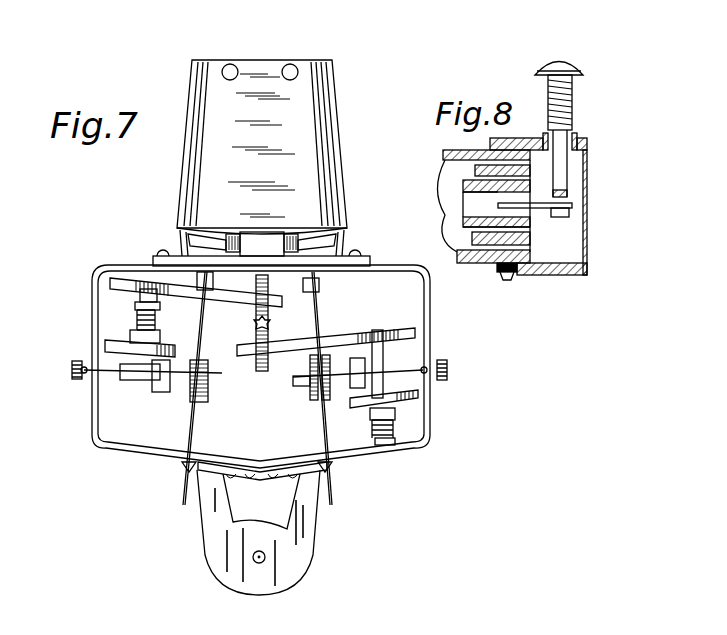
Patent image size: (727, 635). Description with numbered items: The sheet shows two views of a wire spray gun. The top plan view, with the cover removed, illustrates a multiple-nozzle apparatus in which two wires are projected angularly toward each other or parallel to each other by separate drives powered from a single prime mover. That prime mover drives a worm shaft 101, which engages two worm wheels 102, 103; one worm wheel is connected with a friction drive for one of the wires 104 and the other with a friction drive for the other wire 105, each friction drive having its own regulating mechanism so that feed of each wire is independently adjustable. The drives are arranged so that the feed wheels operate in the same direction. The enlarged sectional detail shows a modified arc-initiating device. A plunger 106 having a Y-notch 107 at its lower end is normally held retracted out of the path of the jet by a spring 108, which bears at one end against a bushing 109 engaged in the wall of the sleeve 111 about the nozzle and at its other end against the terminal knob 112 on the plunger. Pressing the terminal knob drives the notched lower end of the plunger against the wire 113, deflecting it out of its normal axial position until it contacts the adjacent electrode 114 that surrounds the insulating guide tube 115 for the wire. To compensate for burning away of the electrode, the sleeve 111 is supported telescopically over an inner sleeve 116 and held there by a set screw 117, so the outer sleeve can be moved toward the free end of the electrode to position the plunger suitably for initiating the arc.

In FIG. 7, the worm shaft 101 is at (255, 323).
In FIG. 7, the worm wheel 102 is at (268, 287).
In FIG. 7, the worm wheel 103 is at (268, 365).
In FIG. 7, the wire 104 is at (188, 424).
In FIG. 7, the wire 105 is at (323, 431).
In FIG. 8, the plunger 106 is at (588, 165).
In FIG. 8, the Y-notch 107 is at (565, 217).
In FIG. 8, the spring 108 is at (574, 100).
In FIG. 8, the bushing 109 is at (578, 138).
In FIG. 8, the sleeve 111 is at (580, 276).
In FIG. 8, the terminal knob 112 is at (582, 62).
In FIG. 8, the wire 113 is at (573, 206).
In FIG. 8, the electrode 114 is at (535, 244).
In FIG. 8, the insulating guide tube 115 is at (465, 197).
In FIG. 8, the inner sleeve 116 is at (478, 265).
In FIG. 8, the set screw 117 is at (510, 281).